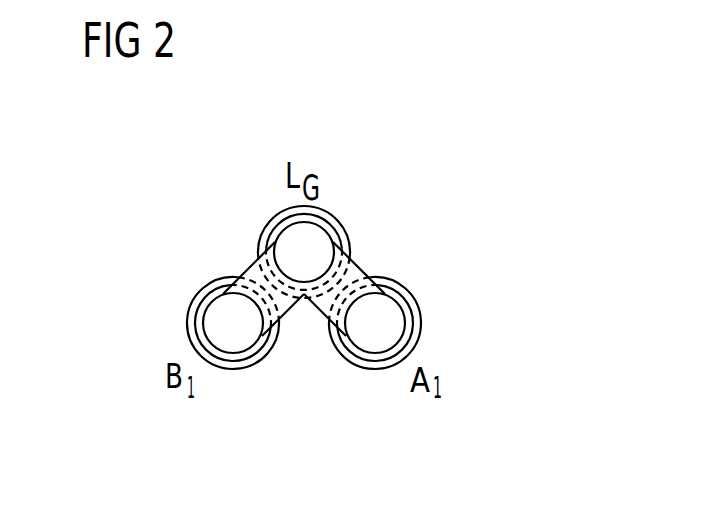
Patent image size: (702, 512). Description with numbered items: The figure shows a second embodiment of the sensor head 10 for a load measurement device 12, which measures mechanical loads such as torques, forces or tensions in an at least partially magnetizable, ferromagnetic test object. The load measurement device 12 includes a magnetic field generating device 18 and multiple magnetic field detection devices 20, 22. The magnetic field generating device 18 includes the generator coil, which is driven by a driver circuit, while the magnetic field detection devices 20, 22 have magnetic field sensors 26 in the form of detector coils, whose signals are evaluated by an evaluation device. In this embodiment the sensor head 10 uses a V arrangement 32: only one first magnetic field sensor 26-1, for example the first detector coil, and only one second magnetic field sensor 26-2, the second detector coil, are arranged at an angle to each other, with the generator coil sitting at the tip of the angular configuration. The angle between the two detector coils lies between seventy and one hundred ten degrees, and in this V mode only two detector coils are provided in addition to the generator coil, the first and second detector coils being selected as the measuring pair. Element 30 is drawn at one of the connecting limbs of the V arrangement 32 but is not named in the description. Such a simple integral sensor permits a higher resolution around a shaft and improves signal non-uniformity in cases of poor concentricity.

The sensor head 10 is at (212, 190).
The load measurement device 12 is at (450, 237).
The magnetic field generating device 18 is at (333, 220).
The magnetic field detection device 20 is at (342, 385).
The magnetic field detection device 22 is at (432, 335).
The magnetic field sensor 26 is at (258, 385).
The first magnetic field sensor 26-1 is at (433, 315).
The second magnetic field sensor 26-2 is at (183, 277).
The web edge 30 is at (360, 268).
The V arrangement 32 is at (370, 135).